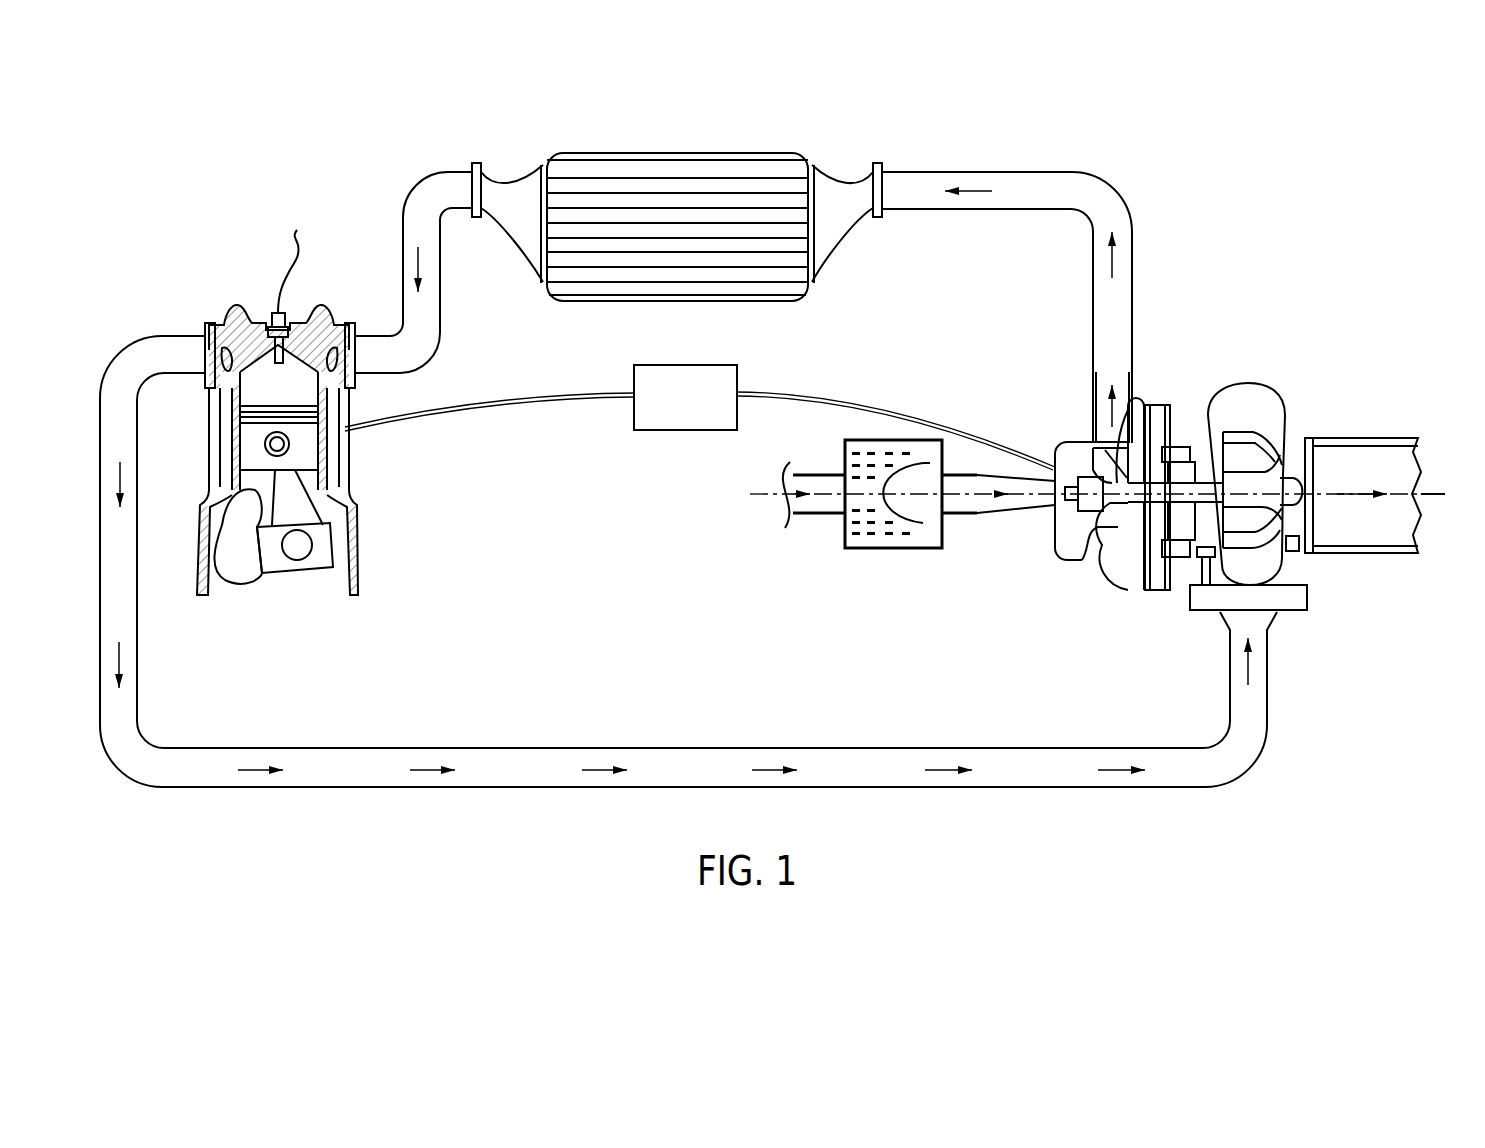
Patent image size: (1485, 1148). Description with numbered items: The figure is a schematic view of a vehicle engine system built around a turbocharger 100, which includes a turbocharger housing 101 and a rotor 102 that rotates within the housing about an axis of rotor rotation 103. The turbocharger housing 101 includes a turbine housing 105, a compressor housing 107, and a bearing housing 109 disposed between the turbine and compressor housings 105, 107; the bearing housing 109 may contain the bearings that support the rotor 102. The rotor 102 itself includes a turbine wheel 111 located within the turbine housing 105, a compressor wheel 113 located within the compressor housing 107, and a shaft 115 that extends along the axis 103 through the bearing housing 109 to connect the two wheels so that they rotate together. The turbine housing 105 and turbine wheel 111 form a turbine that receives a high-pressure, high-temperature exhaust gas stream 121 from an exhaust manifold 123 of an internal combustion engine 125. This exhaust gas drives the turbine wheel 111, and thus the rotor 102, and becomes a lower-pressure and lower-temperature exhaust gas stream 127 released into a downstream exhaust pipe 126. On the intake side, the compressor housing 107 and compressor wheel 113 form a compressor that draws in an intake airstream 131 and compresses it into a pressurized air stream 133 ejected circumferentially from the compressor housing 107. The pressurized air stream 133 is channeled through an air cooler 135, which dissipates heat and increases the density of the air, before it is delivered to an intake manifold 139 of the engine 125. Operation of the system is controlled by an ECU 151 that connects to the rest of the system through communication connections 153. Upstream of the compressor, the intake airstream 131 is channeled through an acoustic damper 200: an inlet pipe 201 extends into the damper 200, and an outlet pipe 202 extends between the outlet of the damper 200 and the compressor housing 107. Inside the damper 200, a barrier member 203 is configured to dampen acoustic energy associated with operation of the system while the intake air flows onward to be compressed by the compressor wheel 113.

The turbocharger 100 is at (1231, 422).
The turbocharger housing 101 is at (1185, 441).
The rotor 102 is at (1157, 502).
The axis of rotor rotation 103 is at (1435, 492).
The turbine housing 105 is at (1262, 382).
The compressor housing 107 is at (1055, 448).
The bearing housing 109 is at (1180, 560).
The turbine wheel 111 is at (1263, 463).
The compressor wheel 113 is at (1056, 559).
The shaft 115 is at (1178, 490).
The exhaust gas stream 121 is at (940, 770).
The exhaust manifold 123 is at (270, 401).
The internal combustion engine 125 is at (303, 385).
The downstream exhaust pipe 126 is at (1375, 438).
The lower-pressure and lower-temperature exhaust gas stream 127 is at (1338, 497).
The intake airstream 131 is at (768, 497).
The pressurized air stream 133 is at (1110, 408).
The air cooler 135 is at (667, 178).
The intake manifold 139 is at (348, 305).
The ECU 151 is at (745, 383).
The communication connections 153 is at (862, 408).
The acoustic damper 200 is at (916, 527).
The inlet pipe 201 is at (812, 475).
The outlet pipe 202 is at (948, 470).
The barrier member 203 is at (922, 530).